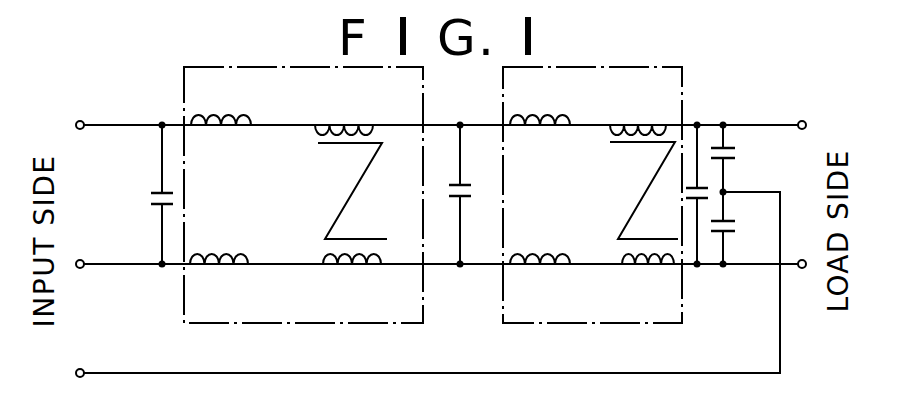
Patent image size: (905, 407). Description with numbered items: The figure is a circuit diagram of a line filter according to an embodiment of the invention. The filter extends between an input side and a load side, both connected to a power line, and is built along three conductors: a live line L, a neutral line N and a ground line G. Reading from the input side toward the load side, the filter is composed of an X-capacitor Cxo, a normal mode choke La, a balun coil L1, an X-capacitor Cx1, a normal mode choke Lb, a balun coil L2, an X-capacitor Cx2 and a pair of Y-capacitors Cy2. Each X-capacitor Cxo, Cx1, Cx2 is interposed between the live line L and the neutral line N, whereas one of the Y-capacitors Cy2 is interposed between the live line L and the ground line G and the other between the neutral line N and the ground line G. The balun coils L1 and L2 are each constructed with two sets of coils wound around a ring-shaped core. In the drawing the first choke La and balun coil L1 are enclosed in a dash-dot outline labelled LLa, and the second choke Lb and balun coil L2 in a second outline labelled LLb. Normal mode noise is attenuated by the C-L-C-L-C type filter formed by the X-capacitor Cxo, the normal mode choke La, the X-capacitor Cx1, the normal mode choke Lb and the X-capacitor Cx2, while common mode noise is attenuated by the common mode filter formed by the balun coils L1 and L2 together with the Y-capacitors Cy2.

The live line L is at (443, 108).
The neutral line N is at (446, 248).
The ground line G is at (84, 357).
The normal mode choke La is at (220, 192).
The balun coil L1 is at (348, 172).
The normal mode choke Lb is at (540, 192).
The balun coil L2 is at (642, 172).
The X-capacitor Cxo is at (148, 201).
The X-capacitor Cx1 is at (474, 193).
The X-capacitor Cx2 is at (686, 193).
The Y-capacitors Cy2 is at (745, 280).
The first line filter module LLa is at (330, 323).
The second line filter module LLb is at (553, 323).